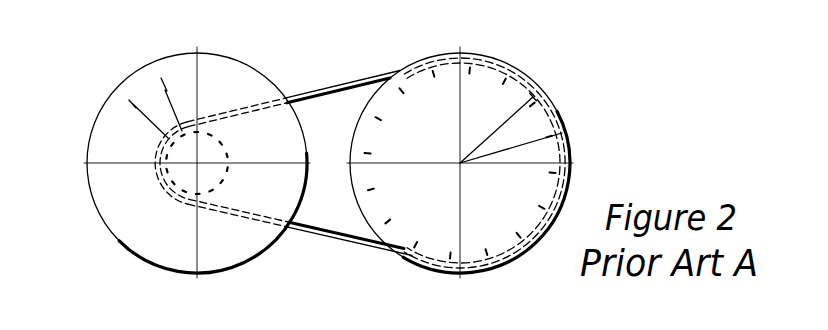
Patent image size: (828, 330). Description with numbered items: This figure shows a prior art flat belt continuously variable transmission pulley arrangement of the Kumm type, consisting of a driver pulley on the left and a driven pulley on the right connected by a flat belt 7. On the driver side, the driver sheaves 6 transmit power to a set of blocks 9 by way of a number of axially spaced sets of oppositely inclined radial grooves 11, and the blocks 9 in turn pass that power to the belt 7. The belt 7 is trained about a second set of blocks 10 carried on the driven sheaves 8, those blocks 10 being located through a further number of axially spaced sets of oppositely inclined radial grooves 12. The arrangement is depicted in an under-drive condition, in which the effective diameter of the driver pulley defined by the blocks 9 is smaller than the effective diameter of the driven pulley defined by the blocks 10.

The driver sheaves 6 is at (145, 89).
The belt 7 is at (360, 77).
The driven sheaves 8 is at (495, 95).
The blocks 9 is at (227, 180).
The blocks 10 is at (372, 172).
The oppositely inclined radial grooves 11 is at (133, 104).
The oppositely inclined radial grooves 12 is at (510, 148).